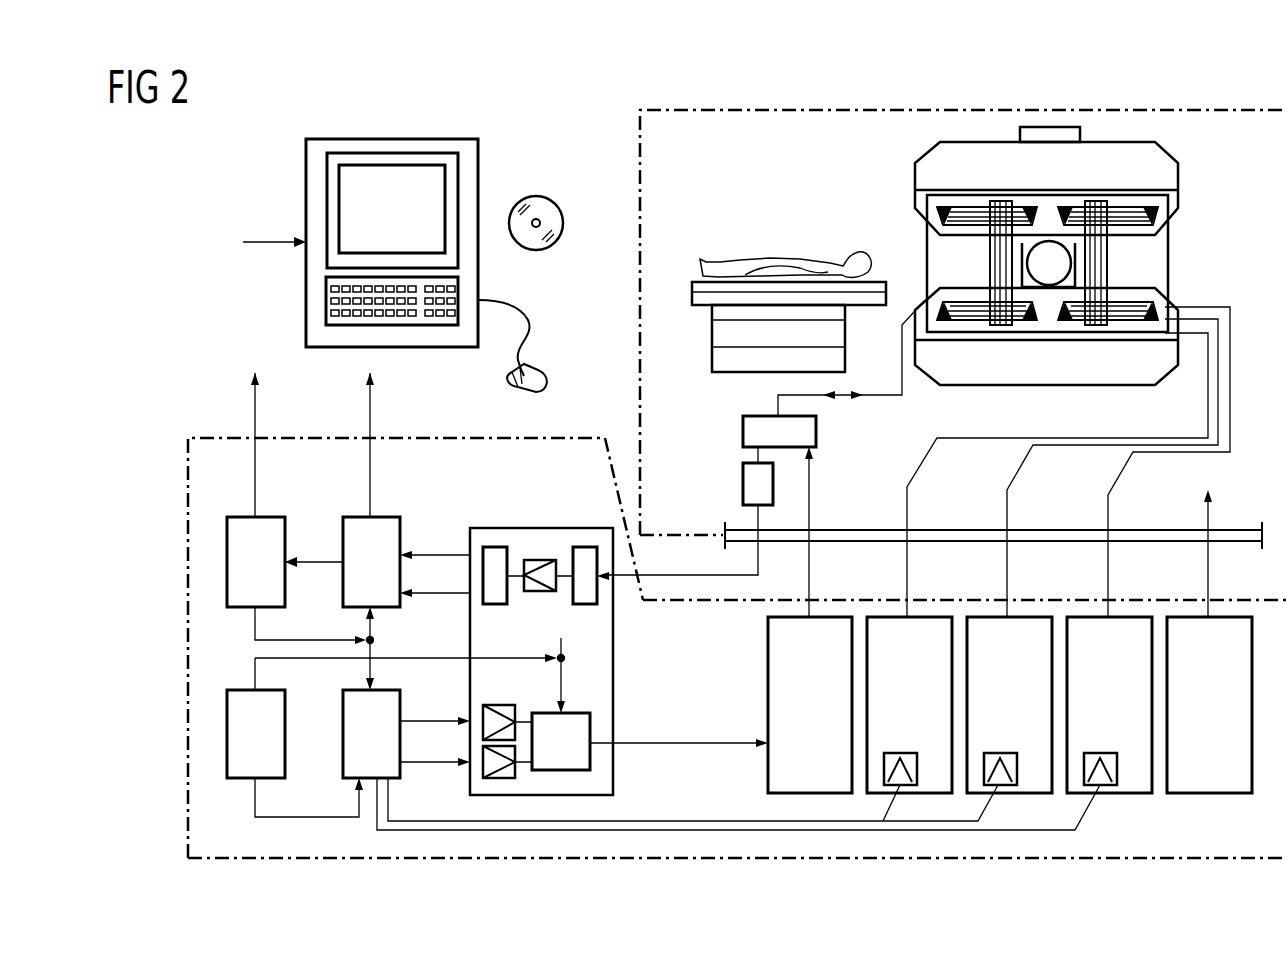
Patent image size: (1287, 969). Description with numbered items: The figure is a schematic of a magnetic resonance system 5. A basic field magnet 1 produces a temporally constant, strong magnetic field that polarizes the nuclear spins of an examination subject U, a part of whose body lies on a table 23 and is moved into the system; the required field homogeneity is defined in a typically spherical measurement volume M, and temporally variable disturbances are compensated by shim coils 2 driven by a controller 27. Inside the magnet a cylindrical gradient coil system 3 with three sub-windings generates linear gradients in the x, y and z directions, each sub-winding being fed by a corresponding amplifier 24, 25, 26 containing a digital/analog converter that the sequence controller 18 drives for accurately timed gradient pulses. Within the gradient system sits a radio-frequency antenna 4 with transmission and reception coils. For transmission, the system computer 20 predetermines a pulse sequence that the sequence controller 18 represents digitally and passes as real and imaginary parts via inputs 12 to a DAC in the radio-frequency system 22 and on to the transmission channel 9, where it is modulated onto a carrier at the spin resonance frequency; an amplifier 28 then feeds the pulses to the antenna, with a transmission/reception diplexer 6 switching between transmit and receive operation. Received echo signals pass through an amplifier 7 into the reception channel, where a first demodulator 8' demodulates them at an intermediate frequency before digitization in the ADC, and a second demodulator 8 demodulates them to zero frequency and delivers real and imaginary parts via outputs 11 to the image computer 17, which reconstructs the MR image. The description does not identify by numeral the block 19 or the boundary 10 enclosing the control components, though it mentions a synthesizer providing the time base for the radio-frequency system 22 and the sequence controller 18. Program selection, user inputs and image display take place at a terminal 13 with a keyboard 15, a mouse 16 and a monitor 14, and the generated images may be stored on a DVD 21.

The basic field magnet 1 is at (1160, 158).
The shim coils 2 is at (1170, 198).
The gradient coil system 3 is at (930, 212).
The radio-frequency antenna 4 is at (1020, 272).
The magnetic resonance system 5 is at (590, 130).
The transmission/reception diplexer 6 is at (743, 428).
The amplifier 7 is at (743, 480).
The second demodulator 8 is at (491, 544).
The first demodulator 8' is at (583, 544).
The transmission channel 9 is at (570, 713).
The control system 10 is at (455, 438).
The outputs 11 is at (470, 592).
The inputs 12 is at (470, 761).
The terminal 13 is at (450, 139).
The monitor 14 is at (376, 165).
The keyboard 15 is at (326, 298).
The mouse 16 is at (545, 366).
The image computer 17 is at (388, 517).
The sequence controller 18 is at (343, 755).
The memory 19 is at (238, 690).
The system computer 20 is at (240, 517).
The DVD 21 is at (540, 196).
The radio-frequency system 22 is at (533, 528).
The table 23 is at (712, 333).
The amplifier 24 is at (933, 617).
The amplifier 25 is at (1030, 617).
The amplifier 26 is at (1136, 617).
The controller 27 is at (1233, 617).
The amplifier 28 is at (830, 617).
The examination subject U is at (812, 262).
The measurement volume M is at (1065, 260).